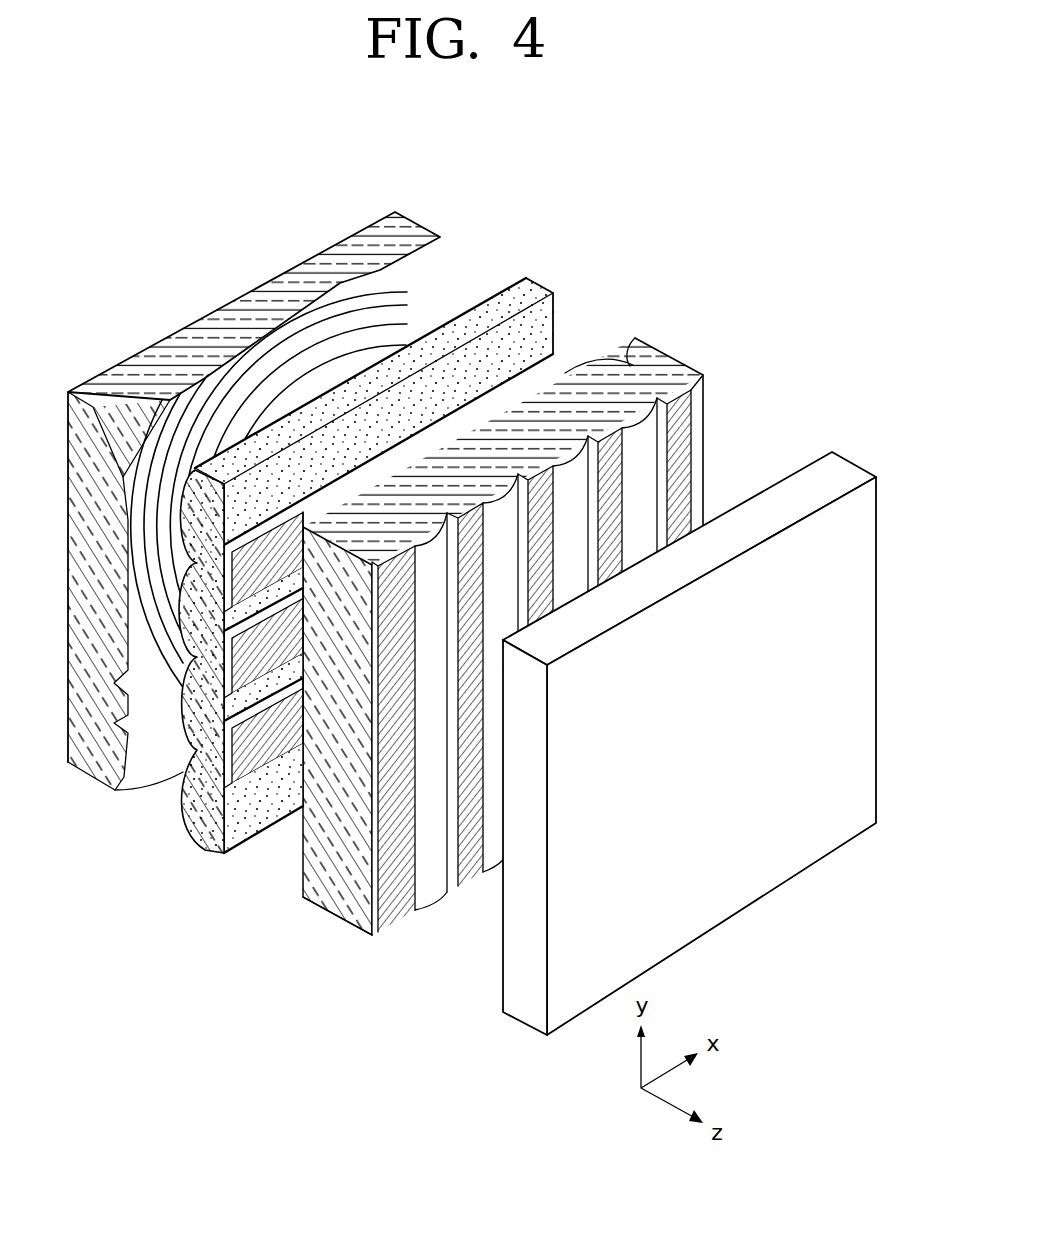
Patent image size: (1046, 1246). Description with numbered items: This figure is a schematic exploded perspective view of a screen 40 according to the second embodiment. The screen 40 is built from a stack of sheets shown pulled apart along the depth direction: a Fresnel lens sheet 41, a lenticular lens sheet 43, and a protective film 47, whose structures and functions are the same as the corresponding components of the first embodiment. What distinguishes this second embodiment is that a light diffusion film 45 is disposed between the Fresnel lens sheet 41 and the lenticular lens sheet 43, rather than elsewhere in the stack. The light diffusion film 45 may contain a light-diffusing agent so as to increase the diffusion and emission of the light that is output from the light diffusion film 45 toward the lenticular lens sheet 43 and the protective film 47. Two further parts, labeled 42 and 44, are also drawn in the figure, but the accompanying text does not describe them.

The display device 40 is at (705, 222).
The Fresnel lens sheet 41 is at (412, 225).
The electrode column 42 is at (185, 793).
The lenticular lens sheet 43 is at (680, 345).
The dielectric bar 44 is at (252, 792).
The light diffusion film 45 is at (337, 618).
The protective film 47 is at (850, 460).